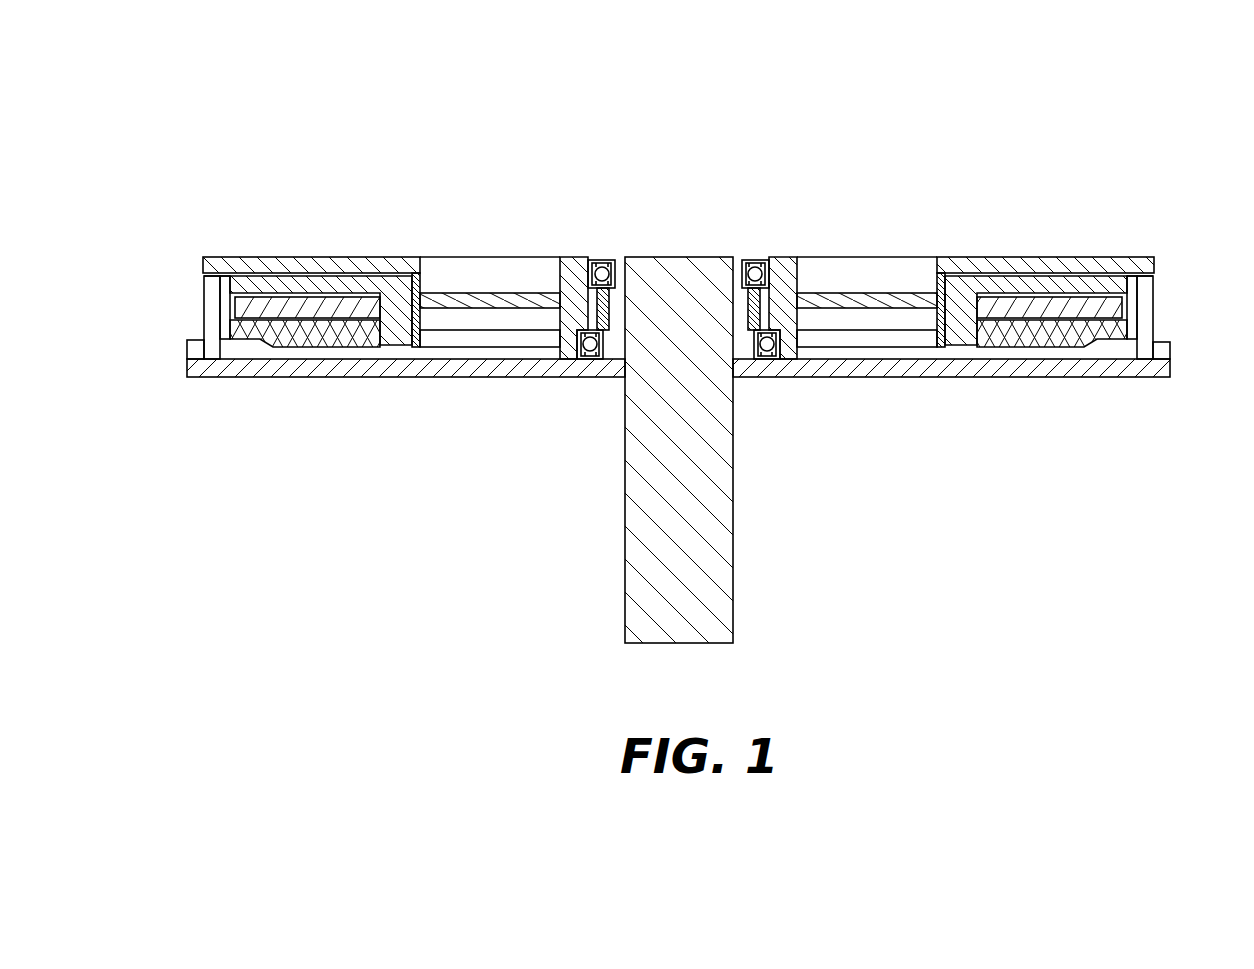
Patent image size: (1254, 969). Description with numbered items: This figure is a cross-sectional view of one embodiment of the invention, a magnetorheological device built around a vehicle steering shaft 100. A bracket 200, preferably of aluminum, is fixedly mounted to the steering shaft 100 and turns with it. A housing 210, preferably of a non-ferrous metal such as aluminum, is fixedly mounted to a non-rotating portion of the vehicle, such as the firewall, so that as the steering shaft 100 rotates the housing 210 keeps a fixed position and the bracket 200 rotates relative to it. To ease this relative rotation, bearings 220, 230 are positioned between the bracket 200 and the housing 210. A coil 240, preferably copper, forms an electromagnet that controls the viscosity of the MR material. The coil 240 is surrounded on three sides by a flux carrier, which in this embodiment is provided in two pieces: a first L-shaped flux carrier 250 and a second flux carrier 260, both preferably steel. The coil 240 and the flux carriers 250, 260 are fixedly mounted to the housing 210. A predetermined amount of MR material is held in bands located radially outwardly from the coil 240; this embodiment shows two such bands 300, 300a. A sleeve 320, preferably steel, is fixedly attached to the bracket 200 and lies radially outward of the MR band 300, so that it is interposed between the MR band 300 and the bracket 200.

The steering shaft 100 is at (720, 607).
The bracket 200 is at (378, 366).
The housing 210 is at (474, 272).
The bearing 220 is at (592, 352).
The bearing 230 is at (603, 273).
The coil 240 is at (318, 304).
The first L-shaped flux carrier 250 is at (272, 278).
The second flux carrier 260 is at (310, 338).
The band of MR material 300 is at (220, 286).
The band of MR material 300a is at (233, 304).
The sleeve 320 is at (212, 336).